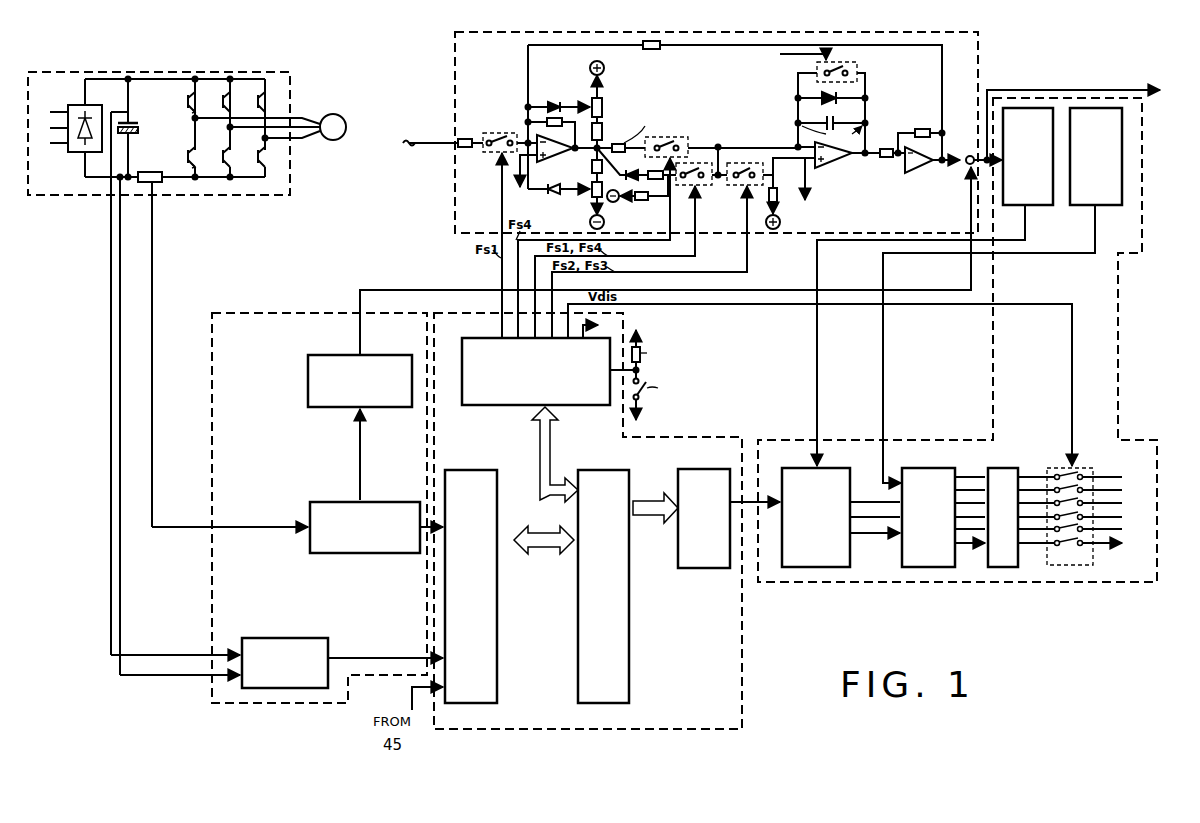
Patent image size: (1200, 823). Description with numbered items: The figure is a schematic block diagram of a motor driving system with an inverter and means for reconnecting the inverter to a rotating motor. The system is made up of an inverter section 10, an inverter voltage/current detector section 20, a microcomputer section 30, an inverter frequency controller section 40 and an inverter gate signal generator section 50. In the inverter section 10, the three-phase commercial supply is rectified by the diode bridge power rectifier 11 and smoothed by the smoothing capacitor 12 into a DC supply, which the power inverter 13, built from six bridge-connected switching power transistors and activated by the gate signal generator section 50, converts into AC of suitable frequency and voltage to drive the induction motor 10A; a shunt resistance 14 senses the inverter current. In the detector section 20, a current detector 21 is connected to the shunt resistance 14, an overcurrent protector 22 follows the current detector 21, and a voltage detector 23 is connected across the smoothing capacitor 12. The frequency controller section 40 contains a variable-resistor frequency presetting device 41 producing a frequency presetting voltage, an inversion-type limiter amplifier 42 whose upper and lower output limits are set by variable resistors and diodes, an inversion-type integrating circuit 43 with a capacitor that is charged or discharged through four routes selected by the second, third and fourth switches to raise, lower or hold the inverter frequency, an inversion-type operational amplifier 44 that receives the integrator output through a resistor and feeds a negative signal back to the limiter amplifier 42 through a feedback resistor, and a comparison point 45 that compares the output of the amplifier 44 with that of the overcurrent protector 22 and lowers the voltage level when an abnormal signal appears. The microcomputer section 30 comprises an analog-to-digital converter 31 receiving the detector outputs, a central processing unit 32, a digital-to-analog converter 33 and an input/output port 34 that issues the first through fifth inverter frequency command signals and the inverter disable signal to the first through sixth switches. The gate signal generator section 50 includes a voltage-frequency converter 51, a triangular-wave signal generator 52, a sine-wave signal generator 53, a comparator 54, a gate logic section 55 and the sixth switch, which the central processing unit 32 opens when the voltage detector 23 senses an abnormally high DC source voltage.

The inverter section 10 is at (264, 70).
The induction motor 10A is at (334, 113).
The power rectifier 11 is at (73, 152).
The smoothing capacitor 12 is at (134, 121).
The power inverter 13 is at (181, 120).
The shunt resistance 14 is at (160, 184).
The inverter voltage/current detector section 20 is at (255, 313).
The current detector 21 is at (338, 500).
The overcurrent protector 22 is at (338, 355).
The voltage detector 23 is at (296, 638).
The microcomputer section 30 is at (686, 437).
The analog-to-digital converter 31 is at (472, 470).
The central processing unit 32 is at (601, 470).
The digital-to-analog converter 33 is at (708, 469).
The input/output port 34 is at (495, 405).
The inverter frequency controller section 40 is at (452, 62).
The inverter frequency presetting device 41 is at (406, 138).
The limiter amplifier 42 is at (547, 162).
The integrating circuit 43 is at (830, 160).
The operational amplifier 44 is at (924, 165).
The comparison point 45 is at (970, 155).
The inverter gate signal generator section 50 is at (1122, 366).
The voltage-frequency converter 51 is at (1038, 206).
The triangular-wave signal generator 52 is at (1104, 206).
The sine-wave signal generator 53 is at (830, 468).
The comparator 54 is at (930, 468).
The gate logic section 55 is at (1008, 468).